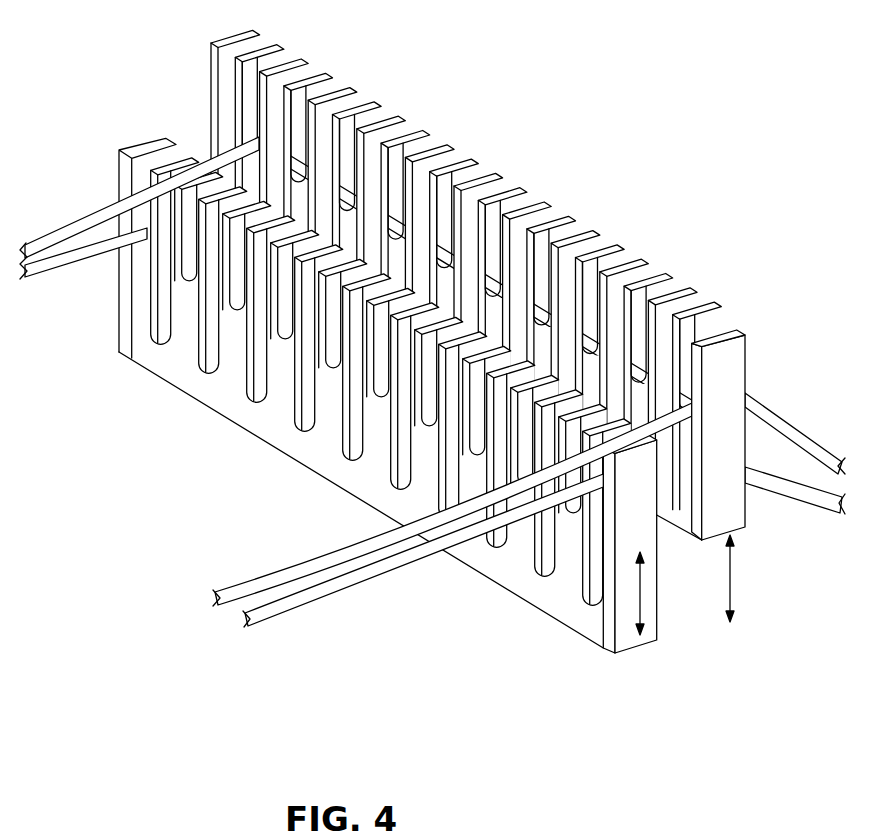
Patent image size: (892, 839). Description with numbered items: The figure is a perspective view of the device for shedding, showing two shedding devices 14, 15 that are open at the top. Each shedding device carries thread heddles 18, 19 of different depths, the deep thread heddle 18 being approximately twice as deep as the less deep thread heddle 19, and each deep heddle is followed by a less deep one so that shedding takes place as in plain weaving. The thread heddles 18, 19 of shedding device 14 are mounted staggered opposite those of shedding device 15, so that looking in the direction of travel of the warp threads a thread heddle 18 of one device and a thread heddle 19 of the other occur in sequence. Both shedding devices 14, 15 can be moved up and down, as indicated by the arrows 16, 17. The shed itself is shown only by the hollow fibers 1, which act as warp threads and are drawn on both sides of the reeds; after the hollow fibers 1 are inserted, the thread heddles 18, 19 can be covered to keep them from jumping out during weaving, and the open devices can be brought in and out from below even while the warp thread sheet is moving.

The hollow fibers 1 is at (70, 230).
The shedding device 14 is at (585, 621).
The shedding device 15 is at (737, 368).
The arrow 16 is at (644, 600).
The arrow 17 is at (735, 578).
The thread heddle 18 is at (400, 137).
The thread heddle 19 is at (328, 82).